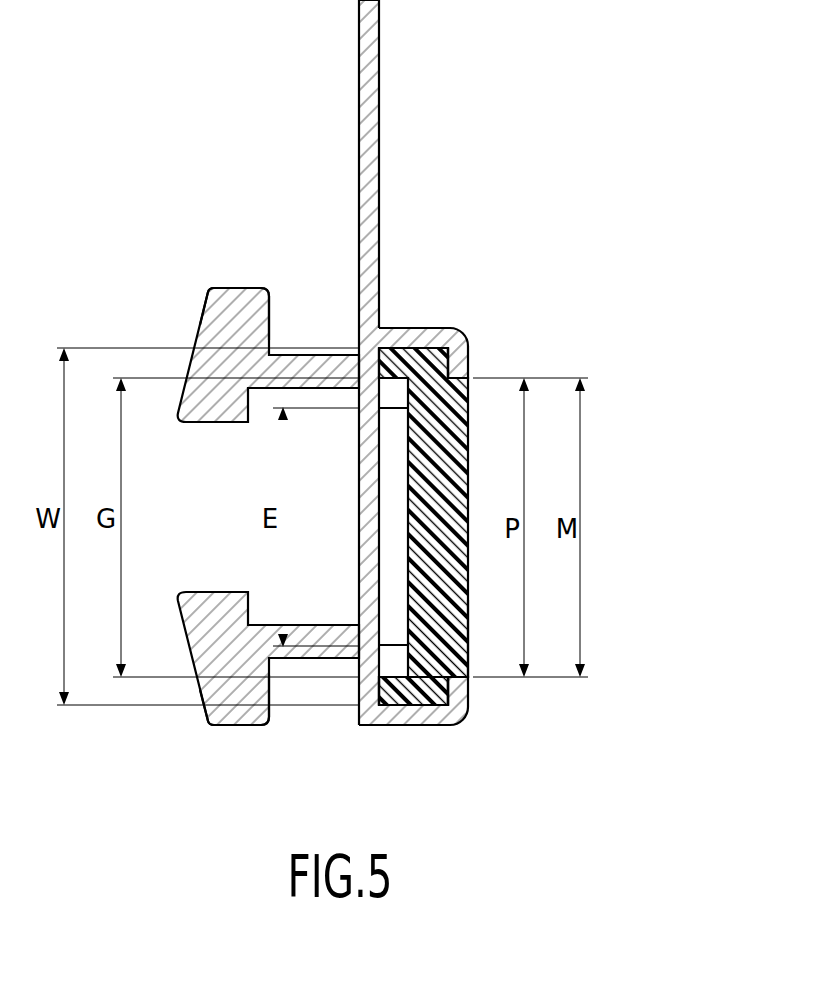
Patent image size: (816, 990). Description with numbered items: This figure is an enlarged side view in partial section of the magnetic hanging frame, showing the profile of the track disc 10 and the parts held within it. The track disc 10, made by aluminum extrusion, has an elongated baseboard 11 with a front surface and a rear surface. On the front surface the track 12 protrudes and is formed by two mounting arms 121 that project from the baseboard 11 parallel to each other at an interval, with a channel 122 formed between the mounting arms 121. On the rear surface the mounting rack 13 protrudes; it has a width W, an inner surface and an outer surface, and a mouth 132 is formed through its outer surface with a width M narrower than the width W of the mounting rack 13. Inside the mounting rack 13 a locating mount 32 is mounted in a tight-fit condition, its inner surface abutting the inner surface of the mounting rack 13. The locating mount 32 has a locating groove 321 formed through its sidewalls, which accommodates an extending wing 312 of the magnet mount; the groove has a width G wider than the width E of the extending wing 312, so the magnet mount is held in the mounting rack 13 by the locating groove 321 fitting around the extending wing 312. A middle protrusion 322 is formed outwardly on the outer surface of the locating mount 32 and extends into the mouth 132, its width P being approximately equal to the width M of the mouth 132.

The track disc 10 is at (422, 362).
The baseboard 11 is at (366, 176).
The track 12 is at (241, 509).
The mounting arm 121 is at (242, 300).
The channel 122 is at (353, 420).
The mounting rack 13 is at (442, 326).
The mouth 132 is at (466, 388).
The locating mount 32 is at (428, 560).
The extending wing 312 is at (393, 588).
The locating groove 321 is at (394, 703).
The middle protrusion 322 is at (469, 646).